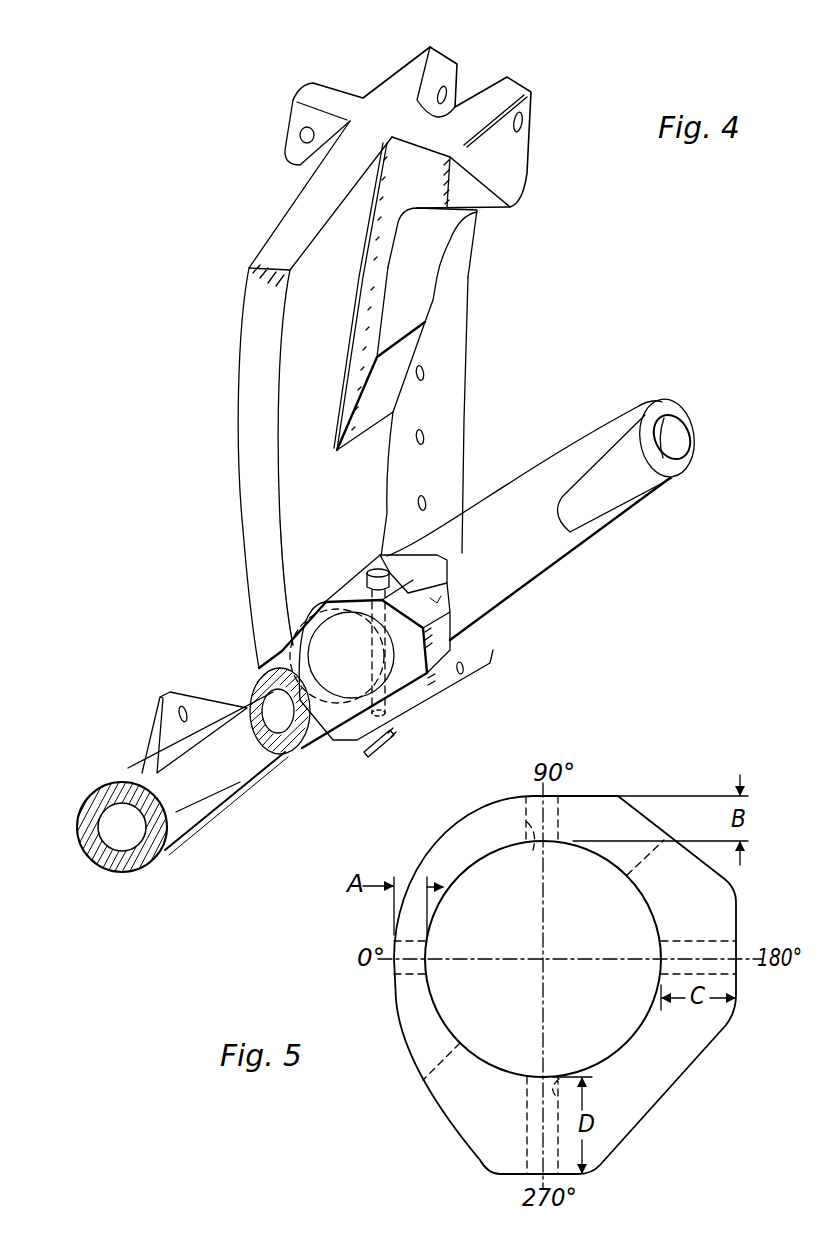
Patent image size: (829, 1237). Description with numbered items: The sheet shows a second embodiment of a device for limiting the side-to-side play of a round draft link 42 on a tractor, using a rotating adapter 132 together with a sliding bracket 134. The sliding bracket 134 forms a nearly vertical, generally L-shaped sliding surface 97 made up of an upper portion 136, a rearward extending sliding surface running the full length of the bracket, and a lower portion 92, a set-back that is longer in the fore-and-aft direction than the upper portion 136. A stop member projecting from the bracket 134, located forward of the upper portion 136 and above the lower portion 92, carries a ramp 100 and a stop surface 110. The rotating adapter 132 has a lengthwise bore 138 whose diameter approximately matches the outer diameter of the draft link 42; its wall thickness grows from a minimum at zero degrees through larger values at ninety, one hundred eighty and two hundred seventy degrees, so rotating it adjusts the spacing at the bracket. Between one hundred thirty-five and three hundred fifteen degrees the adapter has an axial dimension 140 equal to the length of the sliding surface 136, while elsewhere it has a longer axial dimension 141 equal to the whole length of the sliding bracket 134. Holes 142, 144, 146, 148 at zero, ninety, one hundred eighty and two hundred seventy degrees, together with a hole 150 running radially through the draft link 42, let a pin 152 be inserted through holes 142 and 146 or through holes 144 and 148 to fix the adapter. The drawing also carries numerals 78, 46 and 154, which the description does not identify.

In FIG. 4, the mounting bracket 78 is at (474, 81).
In FIG. 4, the sliding bracket 134 is at (235, 220).
In FIG. 4, the sliding surface 136 is at (331, 338).
In FIG. 4, the stop surface 110 is at (430, 277).
In FIG. 4, the ramp 100 is at (424, 343).
In FIG. 4, the lower portion 92 is at (380, 461).
In FIG. 4, the sliding surface 97 is at (315, 491).
In FIG. 4, the pivot boss 46 is at (682, 432).
In FIG. 4, the draft link 42 is at (567, 543).
In FIG. 4, the axial dimension 141 is at (436, 556).
In FIG. 4, the axial dimension 140 is at (437, 597).
In FIG. 4, the rotating adapter 132 is at (404, 692).
In FIG. 5, the rotating adapter 132 is at (606, 812).
In FIG. 4, the hole 150 is at (372, 664).
In FIG. 4, the pin 152 is at (378, 568).
In FIG. 4, the pin 154 is at (382, 755).
In FIG. 5, the lengthwise bore 138 is at (600, 938).
In FIG. 5, the hole 144 is at (533, 852).
In FIG. 5, the hole 142 is at (414, 974).
In FIG. 5, the hole 146 is at (673, 974).
In FIG. 5, the hole 148 is at (553, 1073).